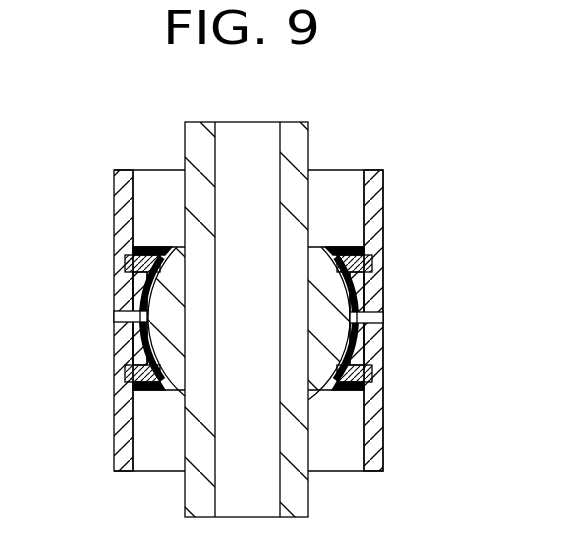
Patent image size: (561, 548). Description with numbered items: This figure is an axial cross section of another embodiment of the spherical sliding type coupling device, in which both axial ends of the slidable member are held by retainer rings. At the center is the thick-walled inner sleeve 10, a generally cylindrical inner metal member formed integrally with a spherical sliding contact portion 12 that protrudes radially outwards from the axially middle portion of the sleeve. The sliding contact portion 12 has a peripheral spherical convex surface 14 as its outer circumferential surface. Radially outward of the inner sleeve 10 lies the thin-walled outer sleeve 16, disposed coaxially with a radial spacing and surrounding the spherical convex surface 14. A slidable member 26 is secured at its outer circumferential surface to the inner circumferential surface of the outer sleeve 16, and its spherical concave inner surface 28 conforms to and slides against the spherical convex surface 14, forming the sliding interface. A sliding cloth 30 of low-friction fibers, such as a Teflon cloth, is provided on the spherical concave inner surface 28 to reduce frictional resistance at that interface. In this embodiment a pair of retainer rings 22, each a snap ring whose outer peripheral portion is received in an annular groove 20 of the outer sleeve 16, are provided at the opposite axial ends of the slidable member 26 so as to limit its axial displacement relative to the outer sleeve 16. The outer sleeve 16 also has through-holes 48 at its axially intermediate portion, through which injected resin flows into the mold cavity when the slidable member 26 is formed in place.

The inner sleeve 10 is at (336, 126).
The spherical sliding contact portion 12 is at (195, 311).
The spherical convex surface 14 is at (150, 260).
The outer sleeve 16 is at (418, 437).
The annular groove 20 is at (368, 260).
The retainer ring 22 is at (130, 263).
The slidable member 26 is at (358, 348).
The spherical concave inner surface 28 is at (143, 345).
The sliding cloth 30 is at (362, 279).
The through-holes 48 is at (120, 317).